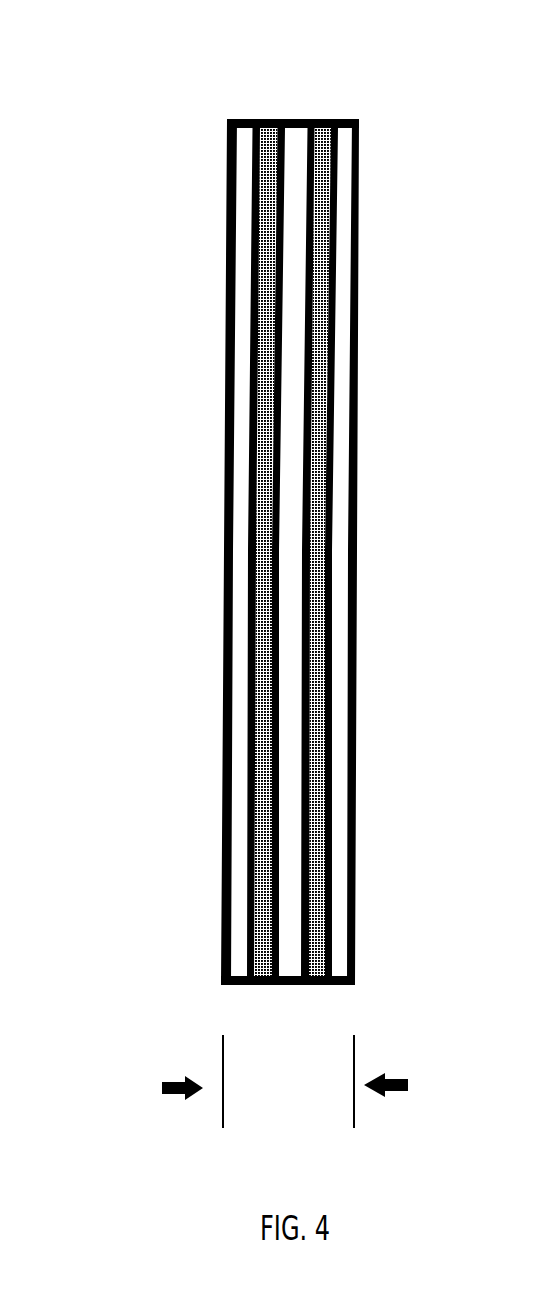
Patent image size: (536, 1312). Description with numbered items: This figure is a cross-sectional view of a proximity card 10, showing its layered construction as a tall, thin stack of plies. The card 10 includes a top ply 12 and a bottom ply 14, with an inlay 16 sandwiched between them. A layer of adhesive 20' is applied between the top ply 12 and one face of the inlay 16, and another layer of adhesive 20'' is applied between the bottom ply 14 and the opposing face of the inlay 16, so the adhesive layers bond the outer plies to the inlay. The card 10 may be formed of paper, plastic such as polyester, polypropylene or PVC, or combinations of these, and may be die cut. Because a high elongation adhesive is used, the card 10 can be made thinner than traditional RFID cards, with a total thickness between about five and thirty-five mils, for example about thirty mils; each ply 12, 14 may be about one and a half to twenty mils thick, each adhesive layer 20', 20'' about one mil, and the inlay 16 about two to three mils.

The card 10 is at (135, 144).
The top ply 12 is at (247, 118).
The bottom ply 14 is at (350, 118).
The inlay 16 is at (297, 118).
The layer of adhesive 20' is at (268, 511).
The another layer of adhesive 20'' is at (326, 511).